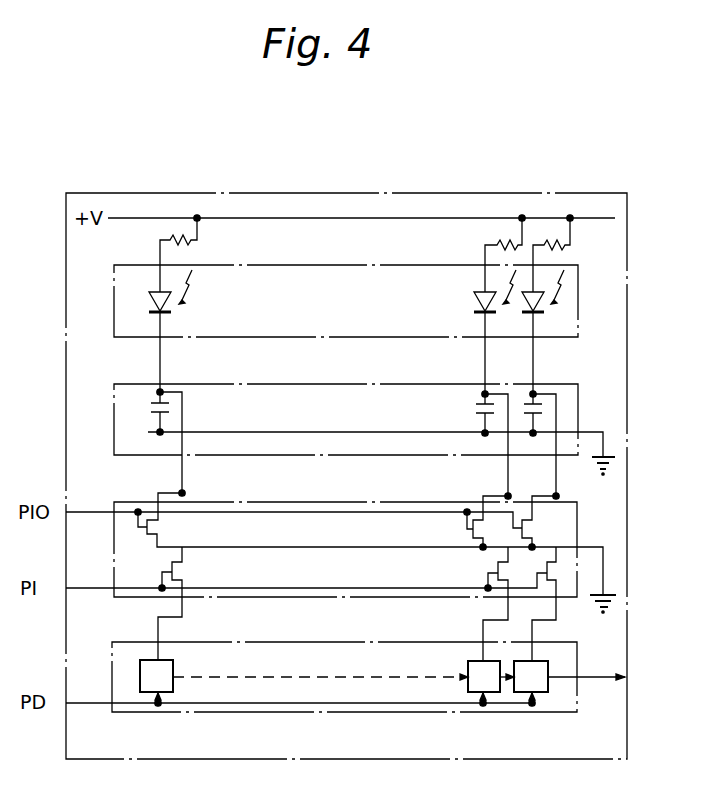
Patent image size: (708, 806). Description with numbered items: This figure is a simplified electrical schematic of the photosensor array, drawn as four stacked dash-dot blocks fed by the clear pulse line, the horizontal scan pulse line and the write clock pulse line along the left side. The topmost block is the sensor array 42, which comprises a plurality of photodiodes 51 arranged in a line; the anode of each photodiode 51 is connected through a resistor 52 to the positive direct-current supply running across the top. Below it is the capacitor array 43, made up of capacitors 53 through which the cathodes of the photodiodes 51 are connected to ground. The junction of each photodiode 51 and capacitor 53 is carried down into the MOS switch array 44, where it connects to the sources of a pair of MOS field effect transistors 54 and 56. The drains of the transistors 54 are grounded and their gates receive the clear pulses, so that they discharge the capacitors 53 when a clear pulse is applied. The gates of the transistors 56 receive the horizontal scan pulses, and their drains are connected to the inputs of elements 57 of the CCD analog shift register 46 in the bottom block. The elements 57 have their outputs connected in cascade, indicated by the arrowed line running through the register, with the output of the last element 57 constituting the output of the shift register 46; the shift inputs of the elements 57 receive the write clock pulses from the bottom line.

The sensor array 42 is at (578, 283).
The capacitor array 43 is at (578, 422).
The MOS switch array 44 is at (577, 530).
The CCD analog shift register 46 is at (577, 661).
The photodiode 51 is at (146, 302).
The resistor 52 is at (182, 240).
The capacitor 53 is at (150, 405).
The MOS field effect transistor 54 is at (478, 500).
The MOS field effect transistor 56 is at (505, 572).
The element of the CCD shift register 57 is at (490, 686).